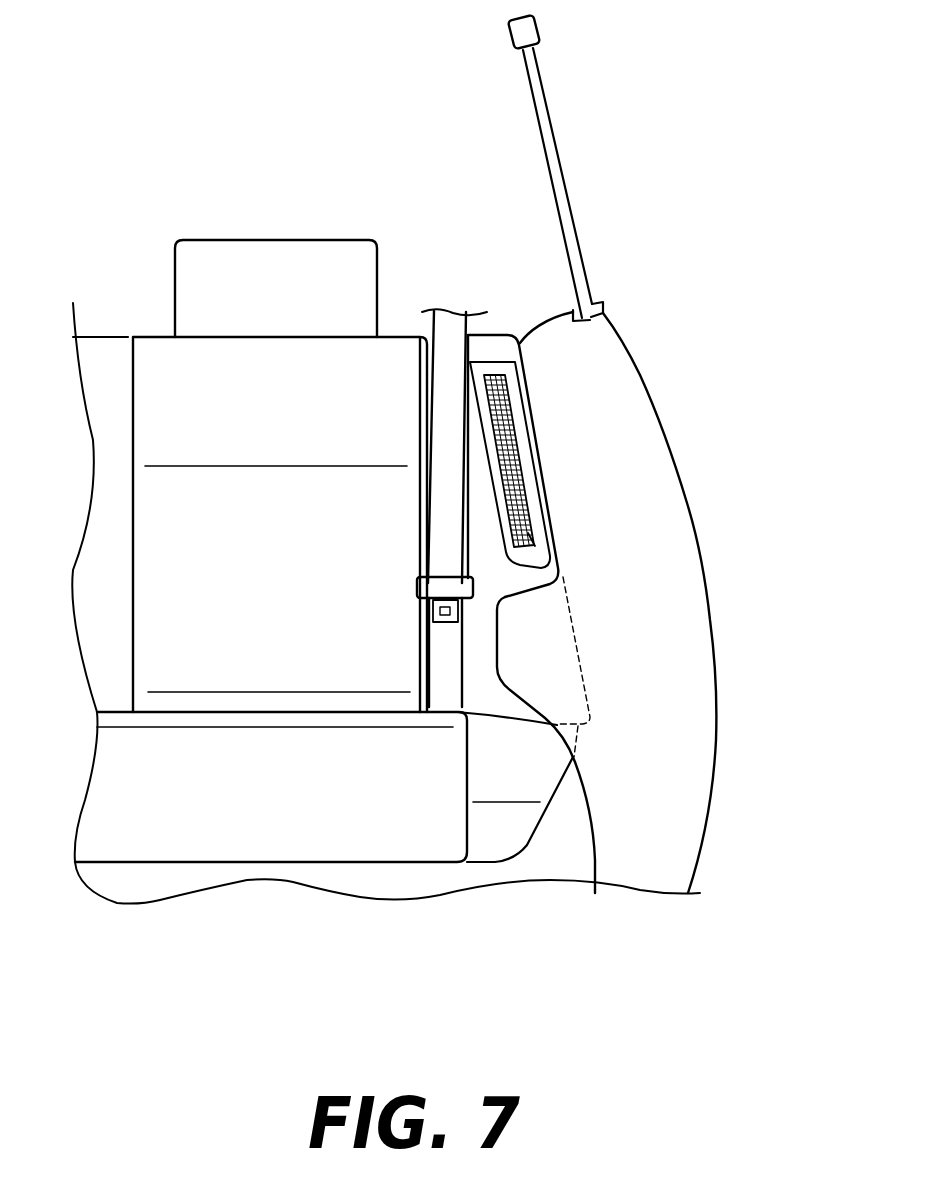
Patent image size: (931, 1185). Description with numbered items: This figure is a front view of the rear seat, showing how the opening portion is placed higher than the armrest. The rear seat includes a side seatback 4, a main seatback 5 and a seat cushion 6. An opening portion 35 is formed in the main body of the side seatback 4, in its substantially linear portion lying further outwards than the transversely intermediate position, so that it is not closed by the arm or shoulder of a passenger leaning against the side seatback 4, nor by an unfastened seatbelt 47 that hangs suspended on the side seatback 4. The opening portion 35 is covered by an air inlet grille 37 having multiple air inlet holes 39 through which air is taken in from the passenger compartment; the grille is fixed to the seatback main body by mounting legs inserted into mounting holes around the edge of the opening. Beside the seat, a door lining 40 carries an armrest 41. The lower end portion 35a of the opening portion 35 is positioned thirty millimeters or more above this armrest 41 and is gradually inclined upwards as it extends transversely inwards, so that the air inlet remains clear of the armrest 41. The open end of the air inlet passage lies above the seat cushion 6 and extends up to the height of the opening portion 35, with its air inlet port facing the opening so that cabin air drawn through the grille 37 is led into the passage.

The side seatback 4 is at (490, 693).
The main seatback 5 is at (157, 367).
The seat cushion 6 is at (177, 825).
The opening portion 35 is at (517, 475).
The lower end portion 35a is at (533, 542).
The air inlet grille 37 is at (512, 387).
The air inlet holes 39 is at (506, 432).
The door lining 40 is at (665, 512).
The armrest 41 is at (523, 627).
The seatbelt 47 is at (443, 392).